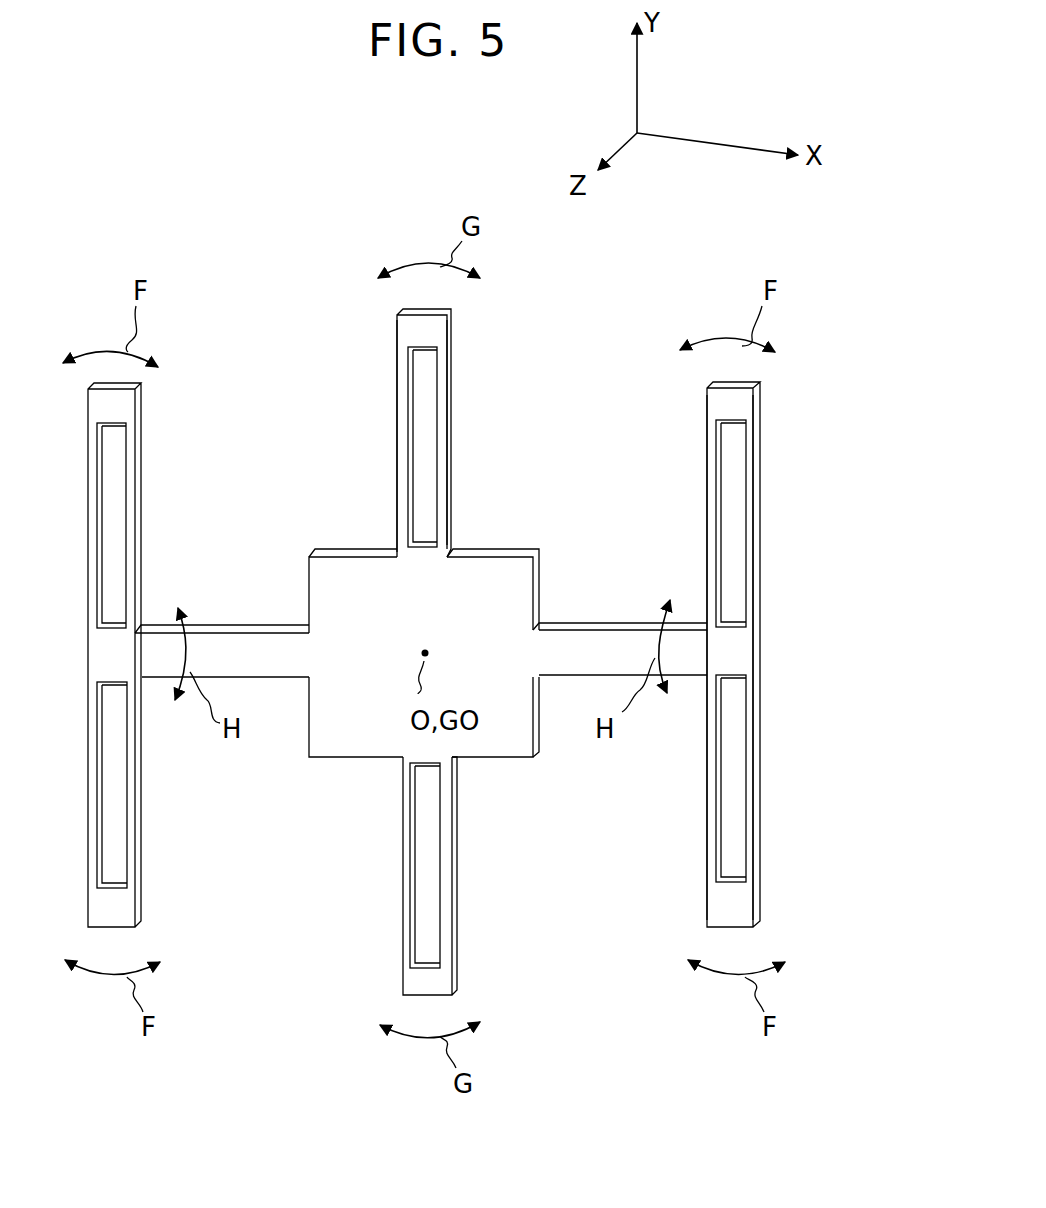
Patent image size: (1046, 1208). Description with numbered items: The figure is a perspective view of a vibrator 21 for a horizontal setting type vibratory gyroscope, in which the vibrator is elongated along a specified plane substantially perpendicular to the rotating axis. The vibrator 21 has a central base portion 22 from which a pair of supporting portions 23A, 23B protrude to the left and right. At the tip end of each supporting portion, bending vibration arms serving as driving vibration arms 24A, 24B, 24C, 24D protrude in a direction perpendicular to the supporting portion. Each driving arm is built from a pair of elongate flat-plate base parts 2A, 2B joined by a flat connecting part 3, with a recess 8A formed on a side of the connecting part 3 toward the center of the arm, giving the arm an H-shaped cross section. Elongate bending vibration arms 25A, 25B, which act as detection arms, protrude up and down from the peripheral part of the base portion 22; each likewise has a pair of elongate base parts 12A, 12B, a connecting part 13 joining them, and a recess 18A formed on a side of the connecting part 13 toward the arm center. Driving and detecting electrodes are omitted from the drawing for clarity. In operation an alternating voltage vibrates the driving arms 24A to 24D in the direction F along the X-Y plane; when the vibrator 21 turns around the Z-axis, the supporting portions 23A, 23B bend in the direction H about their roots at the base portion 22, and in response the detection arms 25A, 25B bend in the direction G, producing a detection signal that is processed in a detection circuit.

The vibrator 21 is at (696, 282).
The base portion 22 is at (495, 568).
The bending vibration arm (detection vibration arm) 25A is at (427, 425).
The bending vibration arm (detection vibration arm) 25B is at (442, 990).
The supporting portion 23A is at (571, 626).
The supporting portion 23B is at (228, 625).
The bending vibration arm (driving vibration arm) 24A is at (750, 407).
The bending vibration arm (driving vibration arm) 24B is at (748, 910).
The bending vibration arm (driving vibration arm) 24C is at (128, 918).
The bending vibration arm (driving vibration arm) 24D is at (127, 410).
The base part 12A is at (398, 393).
The base part 12B is at (445, 385).
The connecting part 13 is at (435, 443).
The recess 18A is at (432, 488).
The base part 2A is at (710, 500).
The base part 2B is at (752, 515).
The recess 8A is at (735, 470).
The connecting part 3 is at (735, 580).